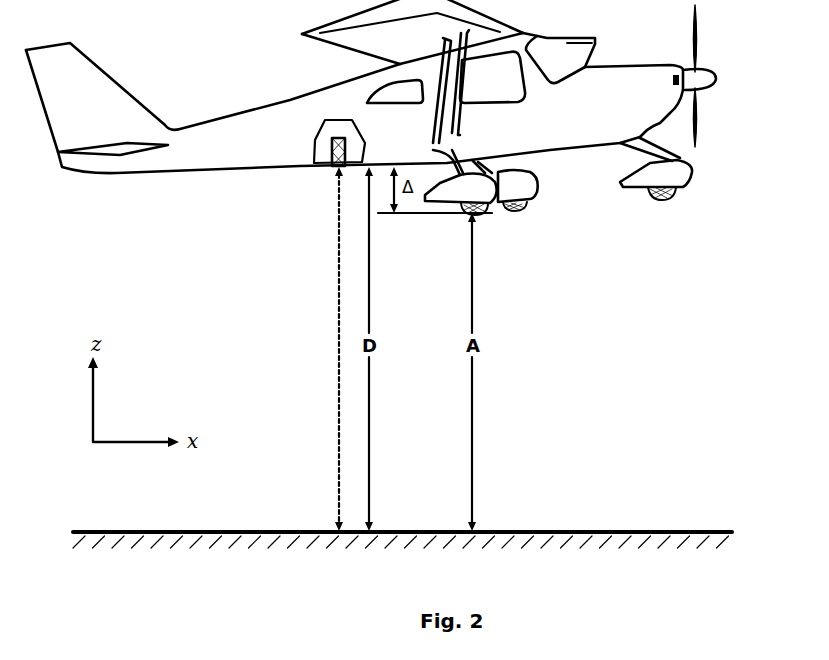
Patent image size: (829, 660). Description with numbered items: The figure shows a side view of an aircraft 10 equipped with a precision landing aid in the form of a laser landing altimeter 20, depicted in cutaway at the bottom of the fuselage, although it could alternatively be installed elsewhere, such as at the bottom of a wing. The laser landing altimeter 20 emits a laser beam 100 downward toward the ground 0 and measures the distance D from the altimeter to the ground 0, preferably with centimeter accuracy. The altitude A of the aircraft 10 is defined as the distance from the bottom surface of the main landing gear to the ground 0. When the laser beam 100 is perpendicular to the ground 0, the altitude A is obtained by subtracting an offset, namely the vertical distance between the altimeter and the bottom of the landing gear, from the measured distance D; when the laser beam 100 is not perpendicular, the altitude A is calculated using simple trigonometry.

The aircraft 10 is at (371, 107).
The laser landing altimeter 20 is at (332, 155).
The laser beam 100 is at (338, 305).
The ground 0 is at (586, 537).